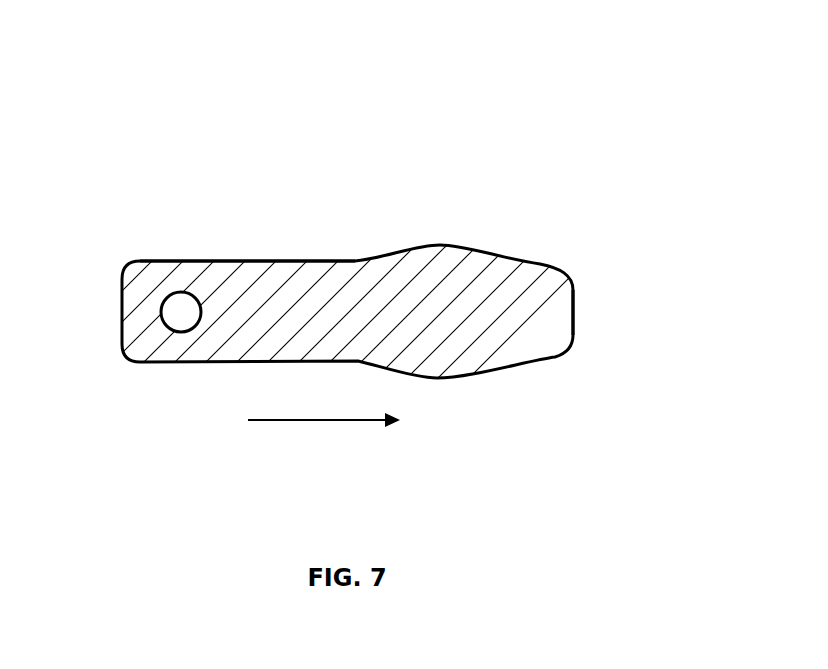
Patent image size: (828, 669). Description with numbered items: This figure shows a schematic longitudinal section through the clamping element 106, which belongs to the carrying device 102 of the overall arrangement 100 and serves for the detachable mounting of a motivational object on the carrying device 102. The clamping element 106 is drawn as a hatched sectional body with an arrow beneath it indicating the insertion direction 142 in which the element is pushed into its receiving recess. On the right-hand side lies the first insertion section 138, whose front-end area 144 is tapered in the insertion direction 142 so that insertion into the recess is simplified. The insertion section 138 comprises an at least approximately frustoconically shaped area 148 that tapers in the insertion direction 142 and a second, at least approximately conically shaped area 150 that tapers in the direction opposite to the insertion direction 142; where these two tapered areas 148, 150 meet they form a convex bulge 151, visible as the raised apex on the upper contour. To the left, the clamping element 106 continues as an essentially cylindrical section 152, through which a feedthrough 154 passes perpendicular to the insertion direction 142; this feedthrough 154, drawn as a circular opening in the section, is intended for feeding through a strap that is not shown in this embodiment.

The surgical implant system 100 is at (125, 123).
The carrying device 102 is at (203, 120).
The clamping element 106 is at (322, 302).
The insertion section 138 is at (518, 272).
The insertion direction 142 is at (313, 421).
The front-end area 144 is at (573, 295).
The frustoconically shaped area 148 is at (497, 257).
The conically shaped area 150 is at (386, 256).
The convex bulge 151 is at (440, 246).
The cylindrical section 152 is at (224, 262).
The feedthrough 154 is at (181, 309).